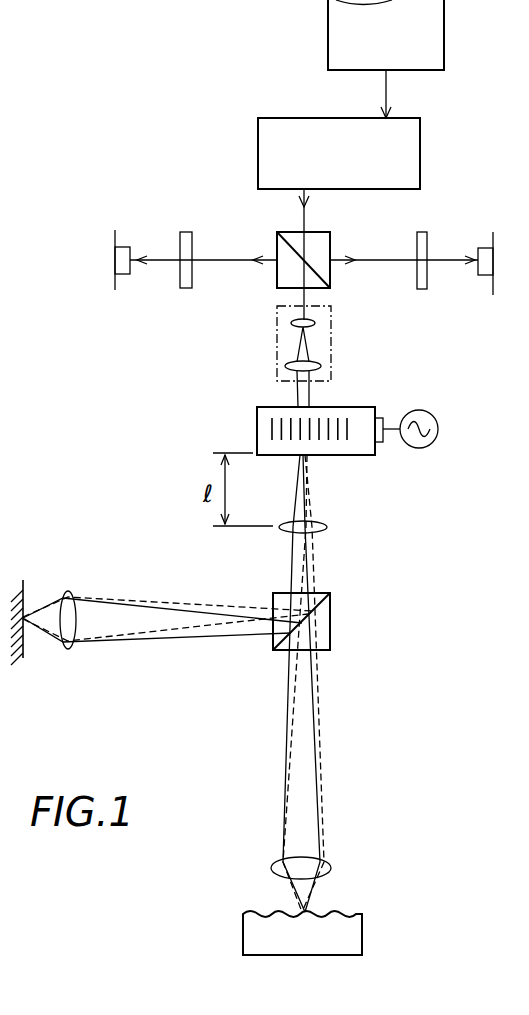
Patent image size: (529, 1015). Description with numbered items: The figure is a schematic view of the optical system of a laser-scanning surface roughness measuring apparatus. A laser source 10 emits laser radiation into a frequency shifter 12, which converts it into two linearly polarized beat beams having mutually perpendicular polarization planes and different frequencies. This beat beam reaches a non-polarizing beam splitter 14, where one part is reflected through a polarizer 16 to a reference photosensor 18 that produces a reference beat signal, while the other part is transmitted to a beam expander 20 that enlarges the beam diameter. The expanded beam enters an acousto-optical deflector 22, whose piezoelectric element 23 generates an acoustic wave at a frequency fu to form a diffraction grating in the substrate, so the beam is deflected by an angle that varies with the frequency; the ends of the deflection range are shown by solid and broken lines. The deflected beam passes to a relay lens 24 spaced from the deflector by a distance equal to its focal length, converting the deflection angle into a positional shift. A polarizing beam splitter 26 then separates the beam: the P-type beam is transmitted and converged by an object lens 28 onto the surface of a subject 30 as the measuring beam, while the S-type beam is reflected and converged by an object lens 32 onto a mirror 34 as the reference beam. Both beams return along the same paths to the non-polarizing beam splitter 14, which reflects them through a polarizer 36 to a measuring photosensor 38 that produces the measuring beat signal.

The laser source 10 is at (437, 47).
The frequency shifter 12 is at (412, 147).
The non-polarizing beam splitter 14 is at (332, 236).
The polarizer 16 is at (422, 280).
The reference photosensor 18 is at (485, 270).
The beam expander 20 is at (275, 322).
The acousto-optical deflector 22 is at (367, 480).
The piezoelectric element 23 is at (384, 420).
The relay lens 24 is at (322, 531).
The polarizing beam splitter 26 is at (327, 635).
The object lens 28 is at (308, 865).
The subject 30 is at (353, 932).
The object lens 32 is at (72, 612).
The mirror 34 is at (28, 652).
The polarizer 36 is at (187, 242).
The measuring photosensor 38 is at (122, 250).